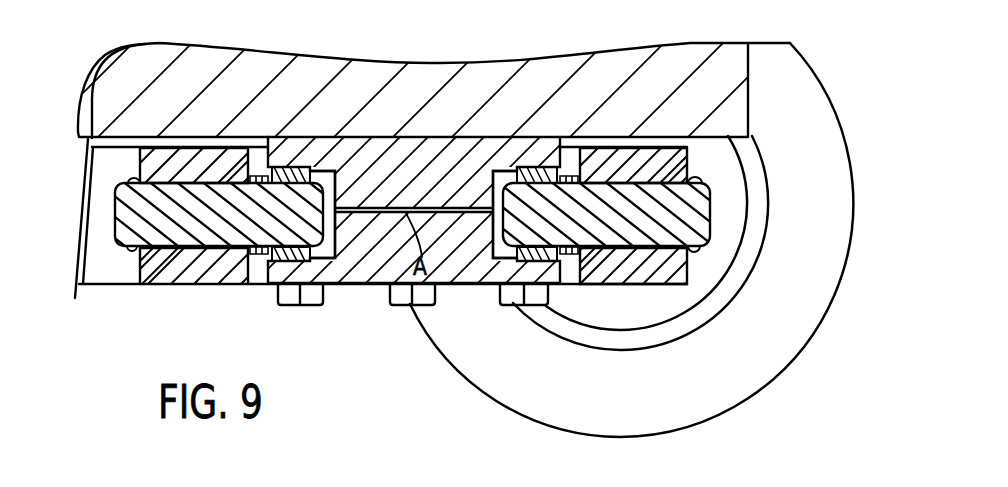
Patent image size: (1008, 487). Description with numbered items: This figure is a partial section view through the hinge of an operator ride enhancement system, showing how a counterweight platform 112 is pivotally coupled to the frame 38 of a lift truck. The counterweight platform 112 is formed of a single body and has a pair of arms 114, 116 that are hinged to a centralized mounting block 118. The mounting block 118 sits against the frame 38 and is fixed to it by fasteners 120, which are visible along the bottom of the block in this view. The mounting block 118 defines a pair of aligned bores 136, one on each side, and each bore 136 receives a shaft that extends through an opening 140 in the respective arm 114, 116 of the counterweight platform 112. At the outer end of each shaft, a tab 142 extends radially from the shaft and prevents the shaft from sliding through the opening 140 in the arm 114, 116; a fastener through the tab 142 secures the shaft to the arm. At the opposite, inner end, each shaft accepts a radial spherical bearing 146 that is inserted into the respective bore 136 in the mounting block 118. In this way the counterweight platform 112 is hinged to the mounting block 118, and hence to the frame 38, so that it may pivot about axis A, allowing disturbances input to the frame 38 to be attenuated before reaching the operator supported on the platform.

The frame 38 is at (463, 99).
The counterweight platform 112 is at (96, 71).
The arm 114 is at (193, 147).
The arm 116 is at (621, 157).
The mounting block 118 is at (438, 181).
The fasteners 120 is at (402, 305).
The bore 136 is at (507, 168).
The opening 140 is at (114, 217).
The tab 142 is at (135, 178).
The radial spherical bearing 146 is at (290, 167).